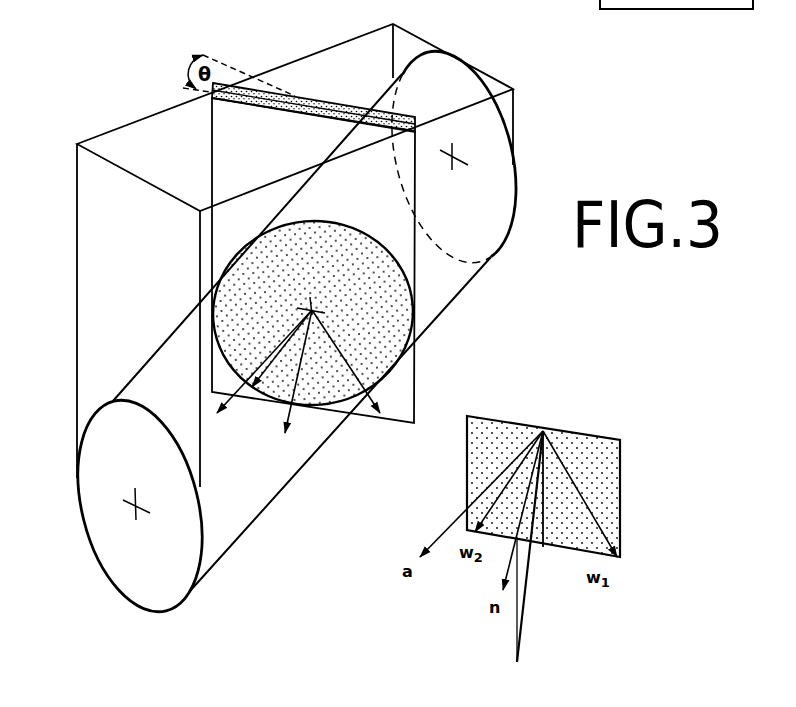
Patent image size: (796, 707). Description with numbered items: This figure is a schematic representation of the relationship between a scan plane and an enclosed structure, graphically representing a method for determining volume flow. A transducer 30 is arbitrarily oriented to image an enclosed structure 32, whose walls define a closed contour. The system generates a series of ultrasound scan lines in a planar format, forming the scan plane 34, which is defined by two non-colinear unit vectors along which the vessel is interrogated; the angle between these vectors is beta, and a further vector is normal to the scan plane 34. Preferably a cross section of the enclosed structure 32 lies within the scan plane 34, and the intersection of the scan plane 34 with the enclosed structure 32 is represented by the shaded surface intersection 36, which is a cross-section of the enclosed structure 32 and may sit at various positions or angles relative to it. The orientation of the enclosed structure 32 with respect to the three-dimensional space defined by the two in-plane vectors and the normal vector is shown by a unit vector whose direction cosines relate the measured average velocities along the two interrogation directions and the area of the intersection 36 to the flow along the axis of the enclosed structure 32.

The transducer 30 is at (297, 97).
The enclosed structure 32 is at (193, 599).
The scan plane 34 is at (397, 378).
The intersection 36 is at (413, 261).